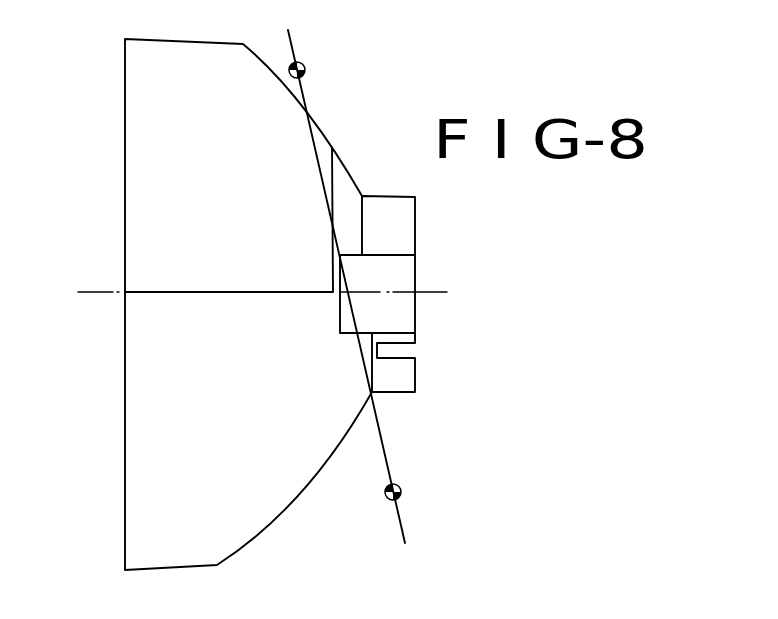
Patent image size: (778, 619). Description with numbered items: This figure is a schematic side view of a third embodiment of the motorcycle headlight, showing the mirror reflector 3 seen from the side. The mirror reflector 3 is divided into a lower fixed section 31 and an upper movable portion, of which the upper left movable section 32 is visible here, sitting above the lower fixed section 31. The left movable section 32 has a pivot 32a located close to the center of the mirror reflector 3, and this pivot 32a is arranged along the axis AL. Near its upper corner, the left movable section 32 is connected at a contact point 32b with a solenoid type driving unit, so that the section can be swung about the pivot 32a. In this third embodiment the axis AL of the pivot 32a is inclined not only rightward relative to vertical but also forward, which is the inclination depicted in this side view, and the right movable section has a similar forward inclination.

The mirror reflector 3 is at (232, 304).
The lower fixed section 31 is at (158, 470).
The upper left movable section 32 is at (147, 149).
The pivot 32a is at (401, 493).
The contact point 32b is at (305, 69).
The axis AL is at (383, 433).